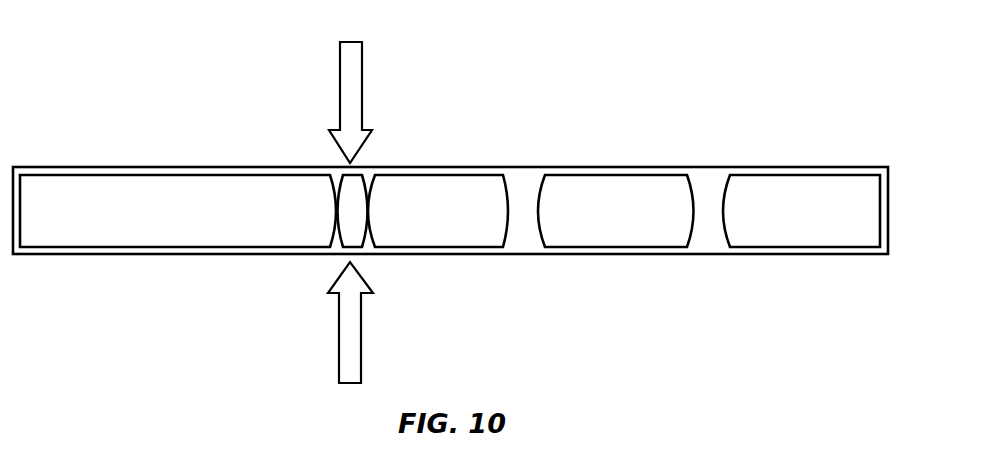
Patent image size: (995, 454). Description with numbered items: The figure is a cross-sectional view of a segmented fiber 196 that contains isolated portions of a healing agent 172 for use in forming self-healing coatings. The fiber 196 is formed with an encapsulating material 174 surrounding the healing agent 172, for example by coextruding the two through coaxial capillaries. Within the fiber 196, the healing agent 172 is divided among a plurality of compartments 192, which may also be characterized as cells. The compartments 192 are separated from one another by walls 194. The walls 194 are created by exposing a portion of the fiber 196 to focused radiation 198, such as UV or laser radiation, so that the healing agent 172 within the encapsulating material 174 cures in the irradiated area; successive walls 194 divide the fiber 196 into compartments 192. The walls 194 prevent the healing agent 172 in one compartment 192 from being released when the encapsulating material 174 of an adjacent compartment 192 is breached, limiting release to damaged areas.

The fiber 196 is at (118, 131).
The focused radiation 198 is at (340, 83).
The compartments 192 is at (510, 155).
The healing agent 172 is at (440, 230).
The encapsulating material 174 is at (618, 230).
The walls 194 is at (523, 246).